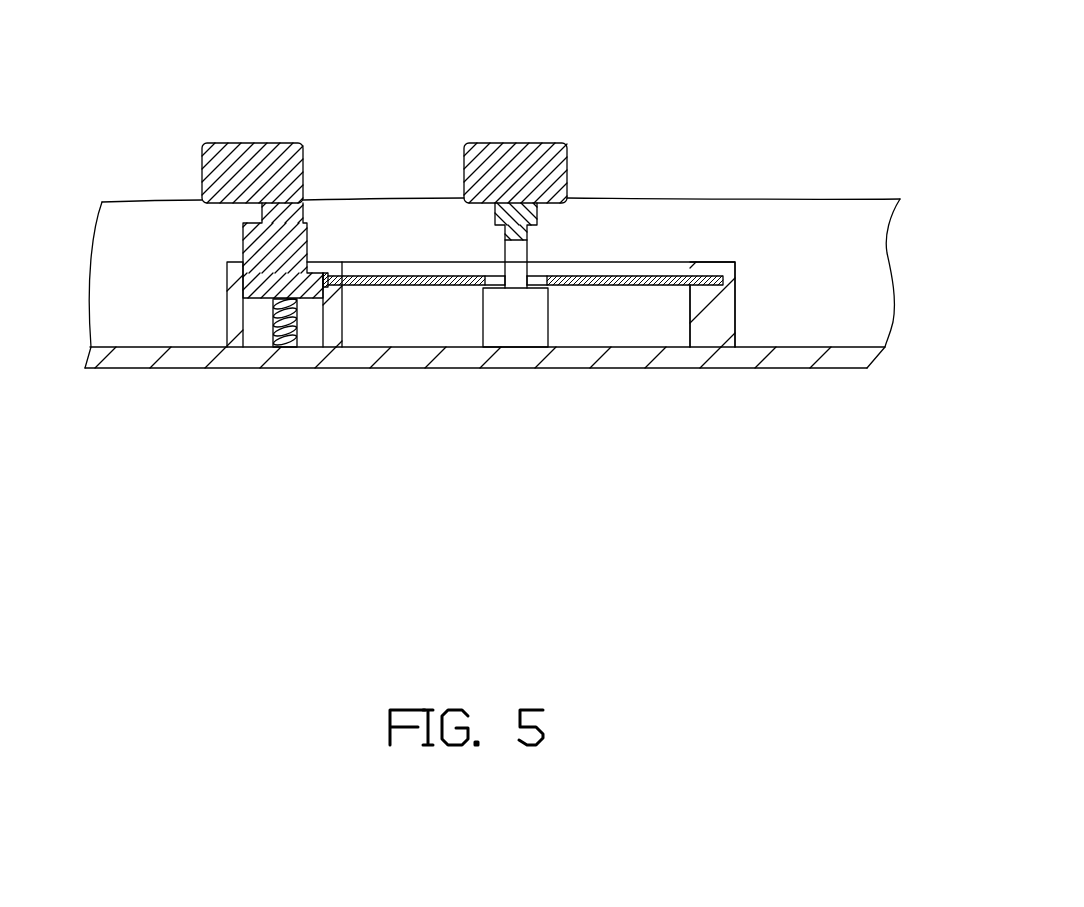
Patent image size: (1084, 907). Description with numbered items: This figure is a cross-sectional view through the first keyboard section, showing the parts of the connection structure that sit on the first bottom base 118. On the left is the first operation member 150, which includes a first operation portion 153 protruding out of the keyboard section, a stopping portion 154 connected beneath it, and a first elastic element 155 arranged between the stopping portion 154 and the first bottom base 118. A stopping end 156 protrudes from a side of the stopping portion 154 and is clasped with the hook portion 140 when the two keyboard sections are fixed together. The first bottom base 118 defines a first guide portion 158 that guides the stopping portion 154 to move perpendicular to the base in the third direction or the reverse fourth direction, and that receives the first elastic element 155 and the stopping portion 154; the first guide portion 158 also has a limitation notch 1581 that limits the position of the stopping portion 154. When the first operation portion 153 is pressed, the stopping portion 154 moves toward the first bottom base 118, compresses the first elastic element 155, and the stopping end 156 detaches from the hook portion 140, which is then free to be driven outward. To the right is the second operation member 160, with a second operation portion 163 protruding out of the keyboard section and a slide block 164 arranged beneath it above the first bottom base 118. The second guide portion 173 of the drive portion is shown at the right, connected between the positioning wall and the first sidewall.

The first bottom base 118 is at (570, 358).
The hook portion 140 is at (655, 277).
The first operation member 150 is at (216, 156).
The first operation portion 153 is at (227, 138).
The stopping portion 154 is at (284, 225).
The first elastic element 155 is at (280, 345).
The stopping end 156 is at (318, 275).
The first guide portion 158 is at (235, 305).
The limitation notch 1581 is at (293, 317).
The second operation member 160 is at (526, 148).
The second operation portion 163 is at (524, 167).
The slide block 164 is at (517, 255).
The second guide portion 173 is at (720, 312).